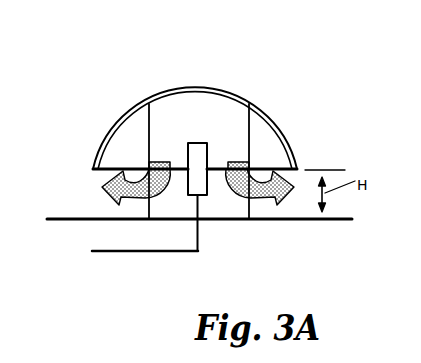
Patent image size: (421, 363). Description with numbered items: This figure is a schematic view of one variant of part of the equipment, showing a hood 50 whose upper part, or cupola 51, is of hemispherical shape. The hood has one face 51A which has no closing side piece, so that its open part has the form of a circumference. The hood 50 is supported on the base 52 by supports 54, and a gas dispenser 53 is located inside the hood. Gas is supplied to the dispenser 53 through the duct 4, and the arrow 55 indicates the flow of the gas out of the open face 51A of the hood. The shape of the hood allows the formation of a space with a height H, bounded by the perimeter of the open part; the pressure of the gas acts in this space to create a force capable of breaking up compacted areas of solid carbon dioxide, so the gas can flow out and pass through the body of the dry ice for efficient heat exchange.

The duct 4 is at (163, 252).
The hood 50 is at (248, 85).
The upper part, or cupola, of the hood 51 is at (135, 104).
The face of the hood 51A is at (213, 171).
The base 52 is at (103, 221).
The gas dispenser 53 is at (190, 143).
The supports 54 is at (138, 209).
The arrow indicating gas flow 55 is at (103, 184).